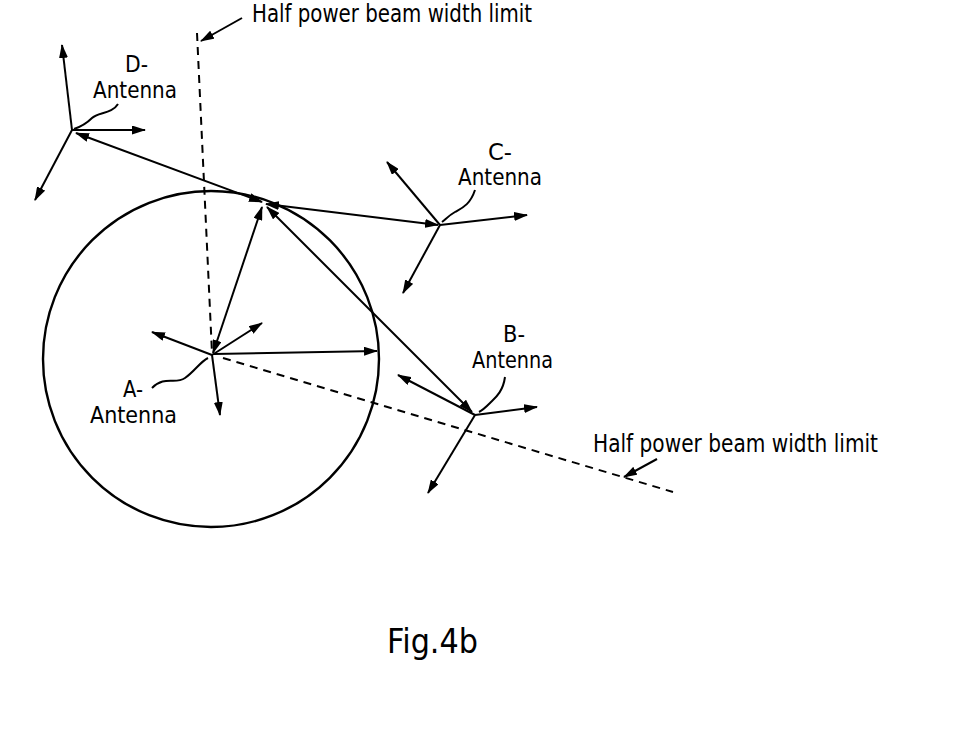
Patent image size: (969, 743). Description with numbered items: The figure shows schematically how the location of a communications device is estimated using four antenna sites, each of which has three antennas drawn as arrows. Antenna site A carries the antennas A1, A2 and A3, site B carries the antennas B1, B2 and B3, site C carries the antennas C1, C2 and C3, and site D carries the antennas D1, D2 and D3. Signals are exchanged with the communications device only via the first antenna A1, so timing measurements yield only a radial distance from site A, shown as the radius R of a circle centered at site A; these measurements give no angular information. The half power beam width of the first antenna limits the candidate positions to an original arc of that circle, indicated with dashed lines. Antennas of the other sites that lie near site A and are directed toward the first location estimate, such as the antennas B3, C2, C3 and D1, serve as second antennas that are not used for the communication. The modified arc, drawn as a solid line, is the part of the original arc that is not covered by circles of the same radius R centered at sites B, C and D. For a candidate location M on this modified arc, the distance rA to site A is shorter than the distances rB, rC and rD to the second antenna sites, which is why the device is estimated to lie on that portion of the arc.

The antenna of antenna site D D1 is at (123, 144).
The antenna of antenna site D D2 is at (53, 176).
The antenna of antenna site D D3 is at (81, 81).
The distance to antenna site D rD is at (188, 173).
The antenna of antenna site A A1 is at (250, 339).
The antenna of antenna site A A2 is at (205, 396).
The antenna of antenna site A A3 is at (169, 347).
The distance to antenna site A rA is at (237, 280).
The radius R is at (211, 359).
The antenna of antenna site C C1 is at (493, 230).
The antenna of antenna site C C2 is at (421, 271).
The antenna of antenna site C C3 is at (413, 177).
The distance to antenna site C rC is at (352, 202).
The antenna of antenna site B B1 is at (514, 424).
The antenna of antenna site B B2 is at (451, 466).
The antenna of antenna site B B3 is at (431, 382).
The distance to antenna site B rB is at (421, 355).
The location of the communications device M is at (369, 309).